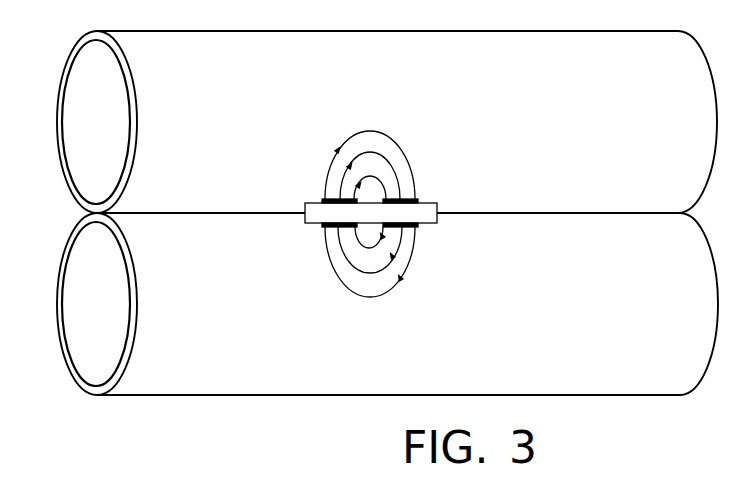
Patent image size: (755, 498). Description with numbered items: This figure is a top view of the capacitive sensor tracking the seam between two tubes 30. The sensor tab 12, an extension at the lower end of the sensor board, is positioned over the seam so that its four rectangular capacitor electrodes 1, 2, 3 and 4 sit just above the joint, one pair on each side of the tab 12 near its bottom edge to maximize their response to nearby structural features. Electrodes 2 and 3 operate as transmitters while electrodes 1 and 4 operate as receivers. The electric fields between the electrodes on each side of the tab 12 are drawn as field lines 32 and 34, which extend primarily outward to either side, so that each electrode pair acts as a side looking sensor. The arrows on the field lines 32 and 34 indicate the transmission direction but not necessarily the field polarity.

The tubes 30 is at (62, 165).
The sensor tab 12 is at (437, 205).
The electrode 1 is at (323, 225).
The electrode 2 is at (417, 225).
The electrode 3 is at (323, 200).
The electrode 4 is at (417, 200).
The field lines 32 is at (356, 290).
The field lines 34 is at (393, 142).